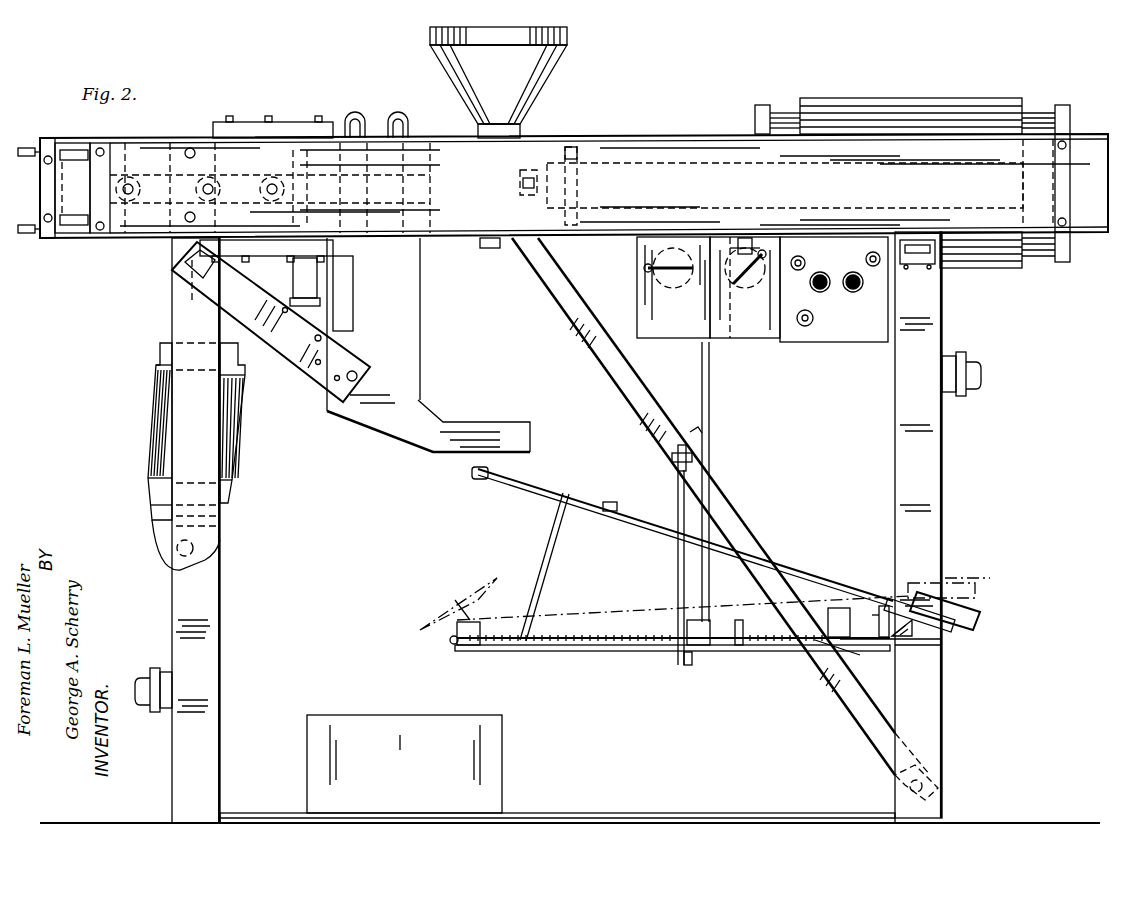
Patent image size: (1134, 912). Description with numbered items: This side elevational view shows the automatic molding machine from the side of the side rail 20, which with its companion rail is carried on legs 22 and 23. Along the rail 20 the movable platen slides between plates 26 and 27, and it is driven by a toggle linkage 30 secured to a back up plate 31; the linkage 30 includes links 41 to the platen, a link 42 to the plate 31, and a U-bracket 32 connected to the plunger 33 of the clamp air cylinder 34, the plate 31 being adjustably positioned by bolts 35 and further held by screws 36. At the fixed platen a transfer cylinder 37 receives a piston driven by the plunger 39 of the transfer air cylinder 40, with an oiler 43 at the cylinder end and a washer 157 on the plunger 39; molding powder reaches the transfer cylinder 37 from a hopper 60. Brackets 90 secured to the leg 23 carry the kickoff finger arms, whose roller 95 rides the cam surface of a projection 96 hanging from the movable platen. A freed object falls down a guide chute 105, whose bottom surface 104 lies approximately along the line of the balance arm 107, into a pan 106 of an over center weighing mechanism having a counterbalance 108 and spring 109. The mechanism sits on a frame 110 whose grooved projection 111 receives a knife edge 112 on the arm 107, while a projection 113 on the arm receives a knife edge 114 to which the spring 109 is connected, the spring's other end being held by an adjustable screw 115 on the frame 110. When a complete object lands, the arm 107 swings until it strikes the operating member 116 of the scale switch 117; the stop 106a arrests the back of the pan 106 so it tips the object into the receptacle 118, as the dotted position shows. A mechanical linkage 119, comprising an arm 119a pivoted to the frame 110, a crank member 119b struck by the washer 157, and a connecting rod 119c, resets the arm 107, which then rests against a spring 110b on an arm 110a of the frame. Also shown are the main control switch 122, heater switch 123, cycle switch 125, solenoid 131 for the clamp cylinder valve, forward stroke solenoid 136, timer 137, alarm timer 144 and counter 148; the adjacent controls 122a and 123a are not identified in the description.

The side rail 20 is at (1094, 226).
The leg 22 is at (943, 497).
The leg 23 is at (222, 616).
The plate 26 is at (293, 122).
The plate 27 is at (283, 257).
The toggle linkage 30 is at (176, 143).
The back up plate 31 is at (90, 170).
The U-bracket 32 is at (197, 218).
The plunger 33 is at (178, 332).
The air cylinder 34 is at (152, 418).
The bolts 35 is at (20, 156).
The screws 36 is at (105, 150).
The transfer cylinder 37 is at (500, 240).
The plunger 39 is at (664, 163).
The air cylinder 40 is at (913, 98).
The links 41 is at (240, 176).
The link 42 is at (153, 198).
The oiler 43 is at (527, 170).
The hopper 60 is at (562, 68).
The brackets 90 is at (305, 374).
The roller 95 is at (320, 302).
The projection 96 is at (343, 270).
The bottom surface 104 is at (381, 438).
The guide chute 105 is at (422, 343).
The pan 106 is at (490, 474).
The stop 106a is at (492, 613).
The balance arm 107 is at (655, 517).
The counterbalance 108 is at (983, 612).
The spring 109 is at (620, 636).
The frame 110 is at (742, 652).
The arm 110a is at (553, 541).
The spring 110b is at (608, 502).
The projection 111 is at (869, 618).
The knife edge 112 is at (883, 604).
The projection 113 is at (897, 630).
The knife edge 114 is at (945, 644).
The adjustable screw 115 is at (456, 647).
The operating member 116 is at (838, 606).
The switch 117 is at (845, 648).
The receptacle 118 is at (415, 768).
The mechanical linkage 119 is at (713, 406).
The arm 119a is at (672, 660).
The crank member 119b is at (740, 238).
The connecting rod 119c is at (712, 445).
The main control switch 122 is at (798, 270).
The switches 122a is at (822, 276).
The heater switch 123 is at (878, 262).
The push button 123a is at (855, 290).
The cycle switch 125 is at (805, 327).
The solenoid 131 is at (140, 685).
The forward stroke solenoid 136 is at (981, 376).
The timer 137 is at (660, 280).
The timer 144 is at (752, 342).
The counter 148 is at (938, 264).
The washer 157 is at (572, 148).